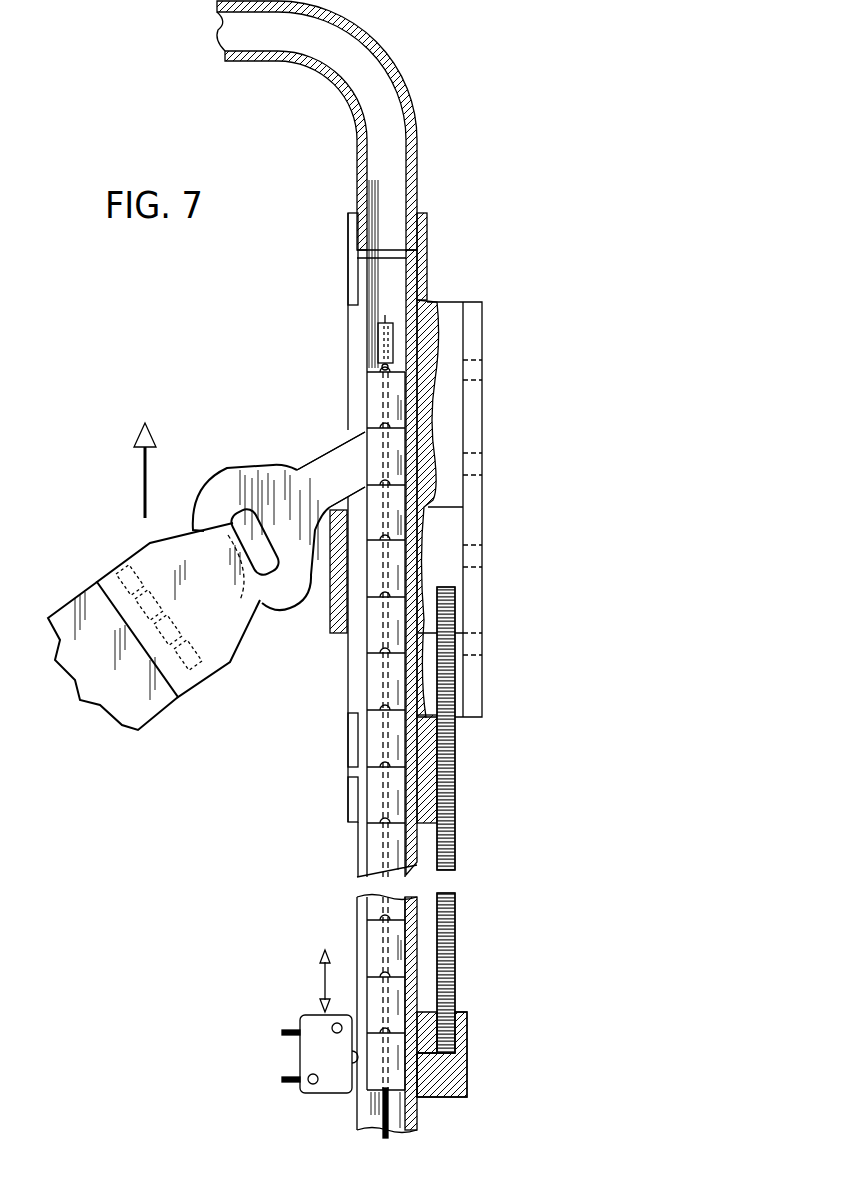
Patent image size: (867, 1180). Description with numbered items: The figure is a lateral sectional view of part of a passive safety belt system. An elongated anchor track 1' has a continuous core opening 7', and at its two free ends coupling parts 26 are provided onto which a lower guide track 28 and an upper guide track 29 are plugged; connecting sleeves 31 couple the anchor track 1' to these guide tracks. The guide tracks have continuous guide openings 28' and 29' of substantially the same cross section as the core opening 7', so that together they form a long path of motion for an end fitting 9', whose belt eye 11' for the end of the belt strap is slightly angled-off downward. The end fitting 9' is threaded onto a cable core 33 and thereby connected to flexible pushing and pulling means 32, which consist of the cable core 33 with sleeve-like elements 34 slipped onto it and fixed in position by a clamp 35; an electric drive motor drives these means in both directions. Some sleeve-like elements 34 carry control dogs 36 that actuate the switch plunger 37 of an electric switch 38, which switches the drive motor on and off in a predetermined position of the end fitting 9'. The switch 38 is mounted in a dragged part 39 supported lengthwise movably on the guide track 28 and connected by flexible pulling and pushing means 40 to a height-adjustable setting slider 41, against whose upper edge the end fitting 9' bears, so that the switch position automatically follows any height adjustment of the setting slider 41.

The anchor track 1' is at (332, 528).
The core opening 7' is at (430, 559).
The end fitting 9' is at (312, 485).
The belt eye 11' is at (261, 520).
The coupling parts 26 is at (362, 277).
The guide track 28 is at (354, 1122).
The guide opening 28' is at (426, 1118).
The guide track 29 is at (317, 129).
The guide opening 29' is at (251, 59).
The connecting sleeves 31 is at (428, 228).
The pushing and pulling means 32 is at (373, 850).
The cable core 33 is at (380, 410).
The sleeve-like elements 34 is at (397, 523).
The clamp 35 is at (375, 338).
The control dogs 36 is at (367, 930).
The switch plunger 37 is at (352, 1058).
The electric switch 38 is at (312, 1022).
The dragged part 39 is at (458, 1067).
The pulling and pushing means 40 is at (455, 840).
The setting slider 41 is at (332, 608).